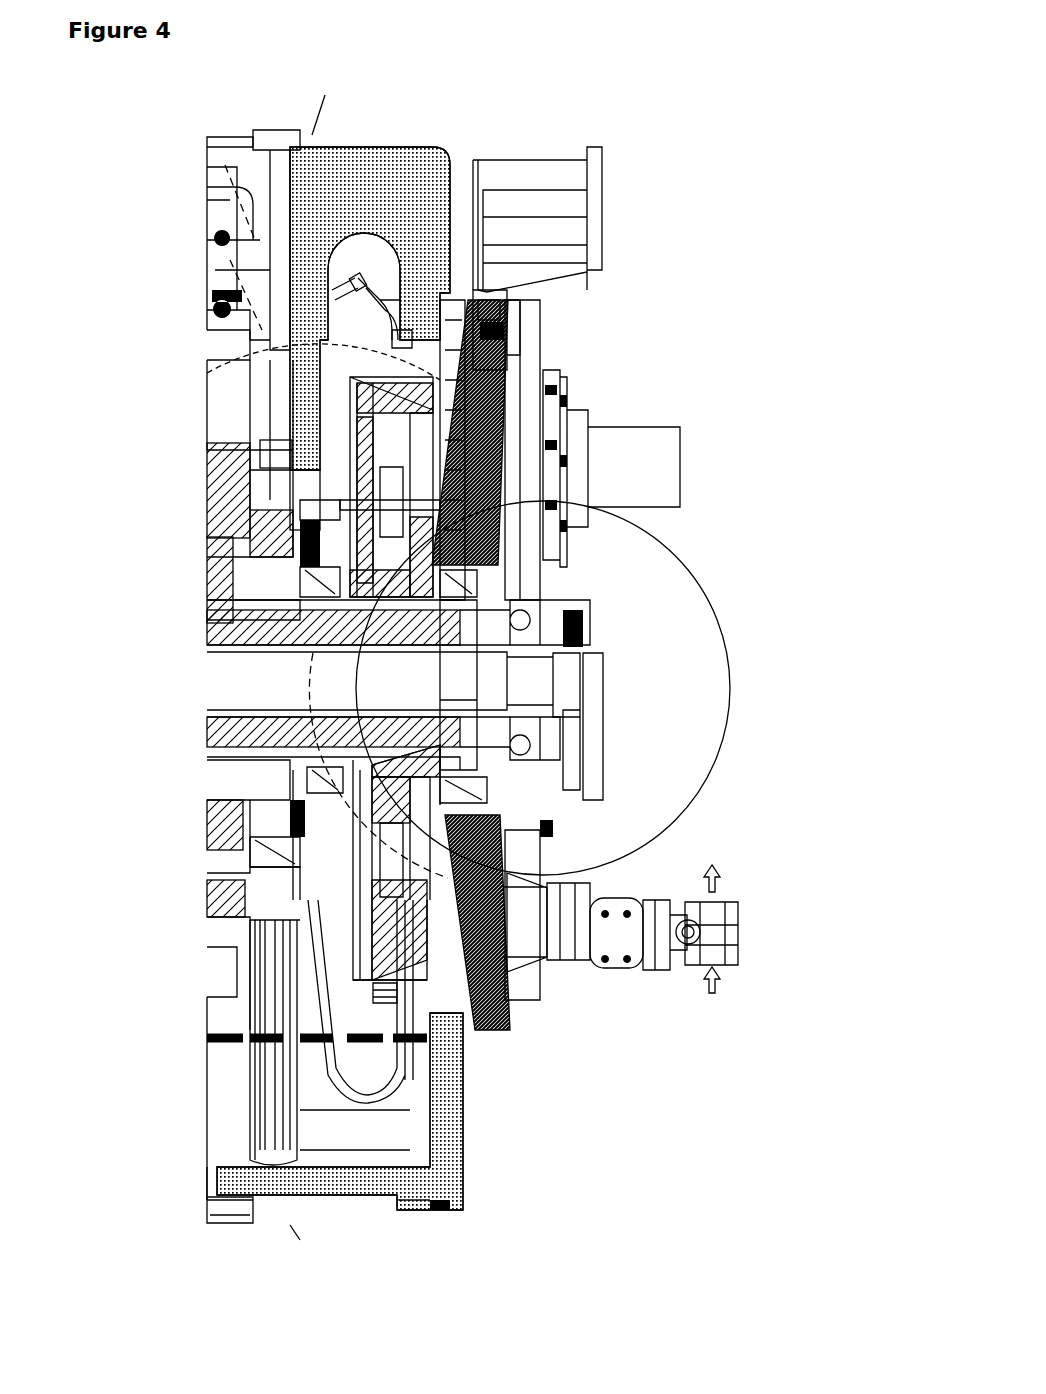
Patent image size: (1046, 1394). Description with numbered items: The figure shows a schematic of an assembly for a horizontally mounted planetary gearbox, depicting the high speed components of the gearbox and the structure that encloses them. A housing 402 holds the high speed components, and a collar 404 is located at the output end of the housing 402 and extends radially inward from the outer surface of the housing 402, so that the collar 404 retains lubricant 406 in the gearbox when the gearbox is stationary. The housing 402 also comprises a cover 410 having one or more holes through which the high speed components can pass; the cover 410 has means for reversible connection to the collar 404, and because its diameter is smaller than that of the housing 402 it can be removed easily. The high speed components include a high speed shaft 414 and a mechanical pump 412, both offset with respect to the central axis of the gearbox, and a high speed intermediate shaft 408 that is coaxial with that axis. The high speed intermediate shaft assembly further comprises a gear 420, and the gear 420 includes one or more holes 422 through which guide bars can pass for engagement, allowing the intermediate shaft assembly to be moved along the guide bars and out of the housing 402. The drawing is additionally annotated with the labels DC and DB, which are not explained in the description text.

The housing 402 is at (393, 163).
The collar 404 is at (467, 1095).
The lubricant 406 is at (463, 1127).
The high speed intermediate shaft 408 is at (288, 698).
The cover 410 is at (520, 990).
The mechanical pump 412 is at (632, 970).
The high speed shaft 414 is at (640, 443).
The gear 420 is at (330, 386).
The holes 422 is at (397, 493).
The disconnect clutch circle DC is at (395, 430).
The bearing circle DB is at (693, 565).